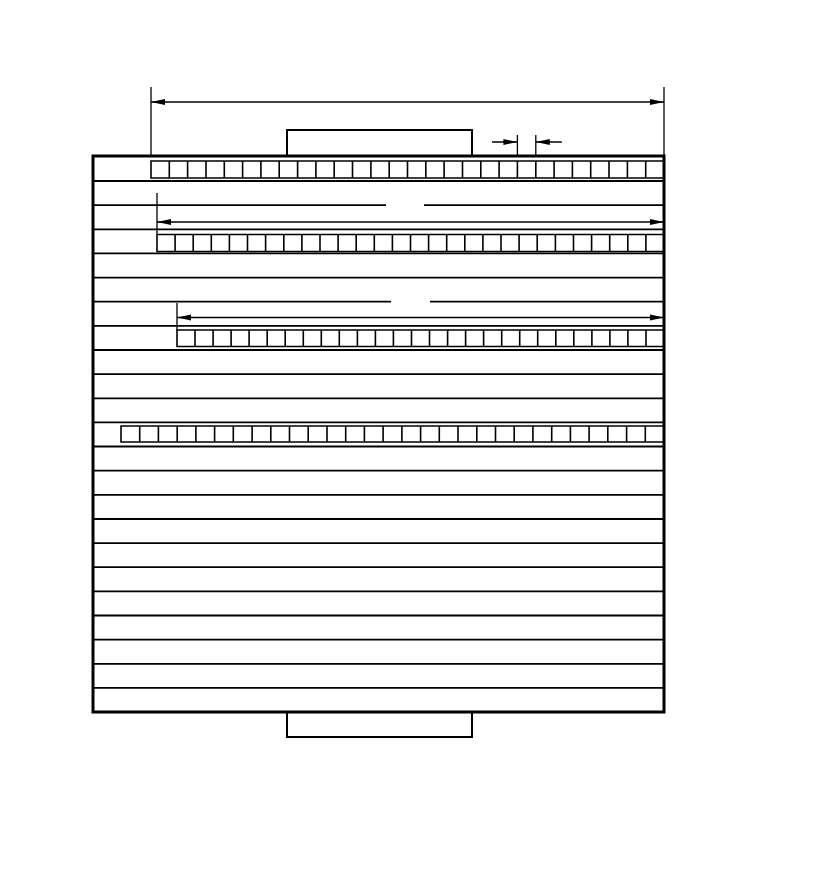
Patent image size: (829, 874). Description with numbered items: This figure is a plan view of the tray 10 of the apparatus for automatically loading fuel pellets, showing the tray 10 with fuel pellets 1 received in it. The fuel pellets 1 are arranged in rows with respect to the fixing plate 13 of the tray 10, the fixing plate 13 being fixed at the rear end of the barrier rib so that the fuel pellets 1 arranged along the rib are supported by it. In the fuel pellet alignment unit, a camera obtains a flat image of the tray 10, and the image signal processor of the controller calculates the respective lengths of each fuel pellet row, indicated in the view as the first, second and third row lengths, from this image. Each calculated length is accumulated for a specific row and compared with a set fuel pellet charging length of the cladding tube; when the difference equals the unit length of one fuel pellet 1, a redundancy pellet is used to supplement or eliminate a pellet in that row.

The tray 10 is at (410, 32).
The fuel pellet 1 is at (158, 171).
The fixing plate 13 is at (665, 193).